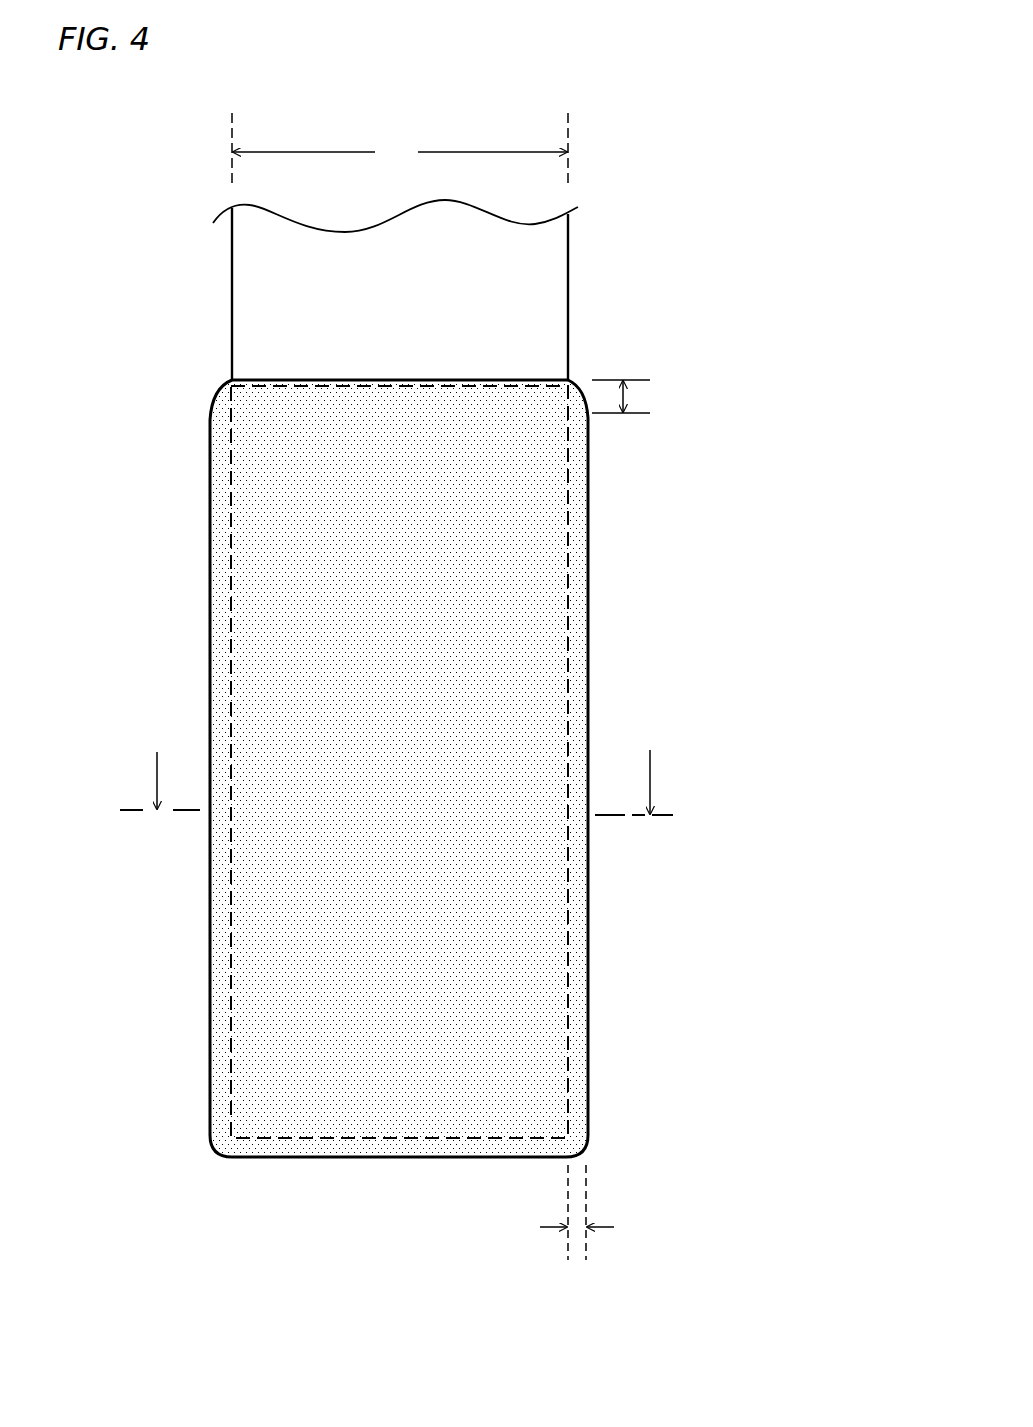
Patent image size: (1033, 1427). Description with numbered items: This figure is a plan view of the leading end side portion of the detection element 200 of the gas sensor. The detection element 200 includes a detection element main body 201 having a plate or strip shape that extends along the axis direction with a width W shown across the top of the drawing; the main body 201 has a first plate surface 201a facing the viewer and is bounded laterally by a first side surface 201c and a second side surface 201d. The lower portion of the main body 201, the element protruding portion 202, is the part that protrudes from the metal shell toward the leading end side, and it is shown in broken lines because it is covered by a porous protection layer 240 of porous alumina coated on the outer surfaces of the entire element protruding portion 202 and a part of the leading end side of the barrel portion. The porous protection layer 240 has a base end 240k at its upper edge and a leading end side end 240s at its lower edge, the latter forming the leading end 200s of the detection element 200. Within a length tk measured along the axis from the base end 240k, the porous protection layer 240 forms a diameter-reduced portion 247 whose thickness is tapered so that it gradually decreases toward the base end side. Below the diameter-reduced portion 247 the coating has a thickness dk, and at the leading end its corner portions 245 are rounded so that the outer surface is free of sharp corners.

The detection element 200 is at (600, 98).
The detection element main body 201 is at (280, 325).
The first plate surface 201a is at (538, 257).
The first side surface 201c is at (568, 296).
The second side surface 201d is at (232, 254).
The element protruding portion 202 is at (262, 896).
The porous protection layer 240 is at (588, 617).
The base end 240k is at (483, 380).
The leading end side end 240s is at (420, 1157).
The diameter-reduced portion 247 is at (228, 390).
The corner portions 245 is at (218, 1150).
The leading end 200s is at (300, 1157).